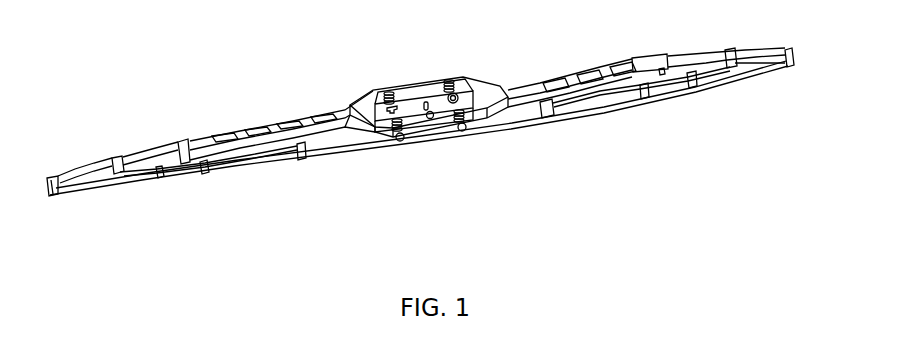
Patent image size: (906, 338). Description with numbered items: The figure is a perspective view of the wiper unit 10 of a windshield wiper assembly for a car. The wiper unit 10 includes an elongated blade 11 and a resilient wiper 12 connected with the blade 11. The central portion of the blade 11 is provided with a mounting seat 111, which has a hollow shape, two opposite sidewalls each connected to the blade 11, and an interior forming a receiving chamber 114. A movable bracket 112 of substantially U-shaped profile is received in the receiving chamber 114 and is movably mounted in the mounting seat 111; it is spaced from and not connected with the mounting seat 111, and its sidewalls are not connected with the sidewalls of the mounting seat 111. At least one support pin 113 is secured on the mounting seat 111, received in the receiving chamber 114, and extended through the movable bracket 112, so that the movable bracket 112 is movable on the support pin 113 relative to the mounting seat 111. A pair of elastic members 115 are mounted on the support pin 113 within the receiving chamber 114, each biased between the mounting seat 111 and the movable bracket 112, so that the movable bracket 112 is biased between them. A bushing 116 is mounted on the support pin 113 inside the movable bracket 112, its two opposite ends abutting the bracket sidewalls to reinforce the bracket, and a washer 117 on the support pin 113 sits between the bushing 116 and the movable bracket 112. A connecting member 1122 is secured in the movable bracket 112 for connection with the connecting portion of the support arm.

The wiper unit 10 is at (290, 77).
The blade 11 is at (547, 108).
The resilient wiper 12 is at (344, 152).
The mounting seat 111 is at (490, 112).
The movable bracket 112 is at (474, 90).
The support pin 113 is at (470, 120).
The receiving chamber 114 is at (414, 96).
The elastic members 115 is at (384, 93).
The bushing 116 is at (447, 82).
The washer 117 is at (456, 92).
The connecting member 1122 is at (425, 110).